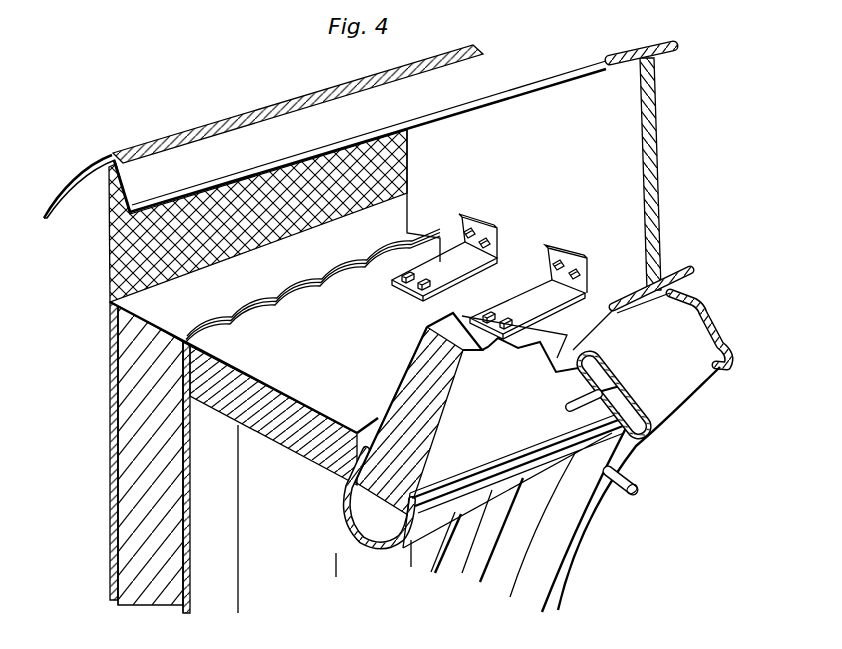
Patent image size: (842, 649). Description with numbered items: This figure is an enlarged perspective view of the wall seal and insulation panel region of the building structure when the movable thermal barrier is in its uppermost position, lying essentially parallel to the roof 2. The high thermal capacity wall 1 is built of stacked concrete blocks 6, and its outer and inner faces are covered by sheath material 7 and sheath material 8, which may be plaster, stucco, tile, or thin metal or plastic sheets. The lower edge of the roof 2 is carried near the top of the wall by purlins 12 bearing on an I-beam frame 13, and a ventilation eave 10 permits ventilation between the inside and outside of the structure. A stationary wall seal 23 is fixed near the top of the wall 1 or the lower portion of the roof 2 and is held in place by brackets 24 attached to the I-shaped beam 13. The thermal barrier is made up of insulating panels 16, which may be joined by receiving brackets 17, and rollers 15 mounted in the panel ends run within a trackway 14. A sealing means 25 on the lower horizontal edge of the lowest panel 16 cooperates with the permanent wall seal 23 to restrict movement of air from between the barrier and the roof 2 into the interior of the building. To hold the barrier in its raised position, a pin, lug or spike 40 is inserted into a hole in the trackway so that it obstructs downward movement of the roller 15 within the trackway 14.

The high thermal capacity wall 1 is at (106, 475).
The roof 2 is at (252, 107).
The concrete blocks 6 is at (137, 387).
The sheath material 7 is at (115, 423).
The sheath material 8 is at (324, 519).
The ventilation eave 10 is at (113, 262).
The purlins 12 is at (142, 182).
The I-beam frame 13 is at (652, 160).
The trackway 14 is at (640, 446).
The rollers 15 is at (603, 393).
The insulating panels 16 is at (408, 403).
The receiving brackets 17 is at (477, 470).
The wall seal 23 is at (277, 434).
The brackets 24 is at (555, 247).
The sealing means 25 is at (525, 472).
The pin, lug or spike 40 is at (639, 484).